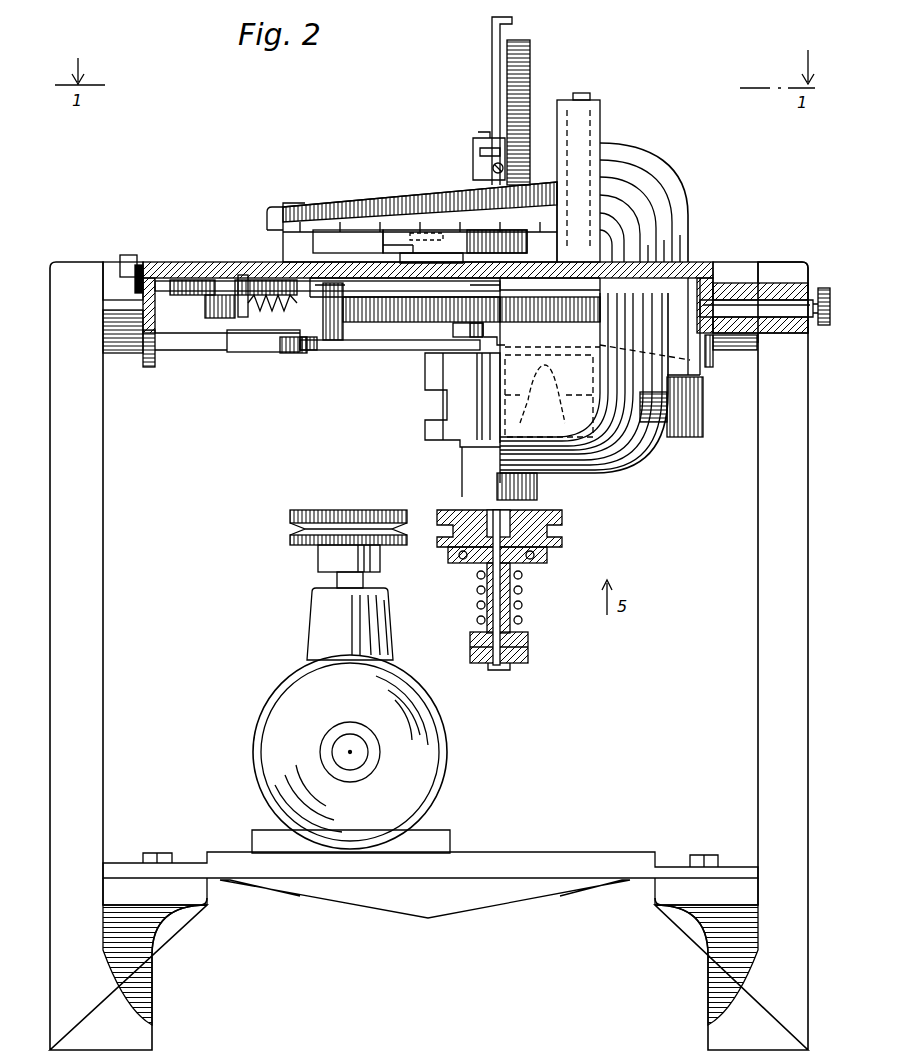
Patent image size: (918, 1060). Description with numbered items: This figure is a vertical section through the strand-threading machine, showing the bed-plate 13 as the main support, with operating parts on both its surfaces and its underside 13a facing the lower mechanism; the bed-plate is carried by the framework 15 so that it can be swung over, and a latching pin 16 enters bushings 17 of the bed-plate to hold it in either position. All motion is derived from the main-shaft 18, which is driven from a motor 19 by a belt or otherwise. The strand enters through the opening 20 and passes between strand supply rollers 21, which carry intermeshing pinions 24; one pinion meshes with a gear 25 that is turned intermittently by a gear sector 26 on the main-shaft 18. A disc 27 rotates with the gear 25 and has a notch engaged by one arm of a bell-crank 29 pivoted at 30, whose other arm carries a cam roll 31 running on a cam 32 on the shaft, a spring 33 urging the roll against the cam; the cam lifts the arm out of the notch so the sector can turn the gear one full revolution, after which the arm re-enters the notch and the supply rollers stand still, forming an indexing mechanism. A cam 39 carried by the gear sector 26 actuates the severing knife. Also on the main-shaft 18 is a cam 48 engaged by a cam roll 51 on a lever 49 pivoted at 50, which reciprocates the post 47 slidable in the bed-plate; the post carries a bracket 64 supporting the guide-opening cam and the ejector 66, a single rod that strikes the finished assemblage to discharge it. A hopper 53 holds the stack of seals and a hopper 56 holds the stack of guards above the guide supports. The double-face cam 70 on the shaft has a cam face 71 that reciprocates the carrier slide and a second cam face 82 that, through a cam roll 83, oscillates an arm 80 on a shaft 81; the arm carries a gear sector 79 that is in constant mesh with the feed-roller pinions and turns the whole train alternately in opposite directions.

The bed-plate 13 is at (153, 265).
The underside of bed-plate 13a is at (388, 280).
The framework 15 is at (97, 485).
The pin 16 is at (770, 305).
The bushings 17 is at (720, 285).
The main-shaft 18 is at (540, 503).
The motor 19 is at (440, 750).
The opening 20 is at (135, 272).
The strand supply rollers 21 is at (190, 277).
The pinions 24 is at (192, 292).
The gear 25 is at (222, 290).
The gear sector 26 is at (395, 312).
The disc 27 is at (228, 340).
The bell-crank 29 is at (358, 345).
The pivot 30 is at (303, 354).
The cam roll 31 is at (455, 333).
The cam 32 is at (492, 340).
The spring 33 is at (275, 315).
The cam 39 is at (690, 366).
The reciprocatory post 47 is at (489, 132).
The cam 48 is at (432, 388).
The lever 49 is at (640, 460).
The pivot 50 is at (705, 415).
The cam roll 51 is at (585, 478).
The hopper 53 is at (518, 54).
The hopper 56 is at (492, 27).
The bracket 64 is at (480, 160).
The ejector 66 is at (502, 150).
The double-face cam 70 is at (342, 228).
The cam face 71 is at (385, 208).
The gear sector 79 is at (274, 207).
The arm 80 is at (445, 195).
The shaft 81 is at (600, 100).
The cam face 82 is at (414, 228).
The cam roll 83 is at (610, 230).